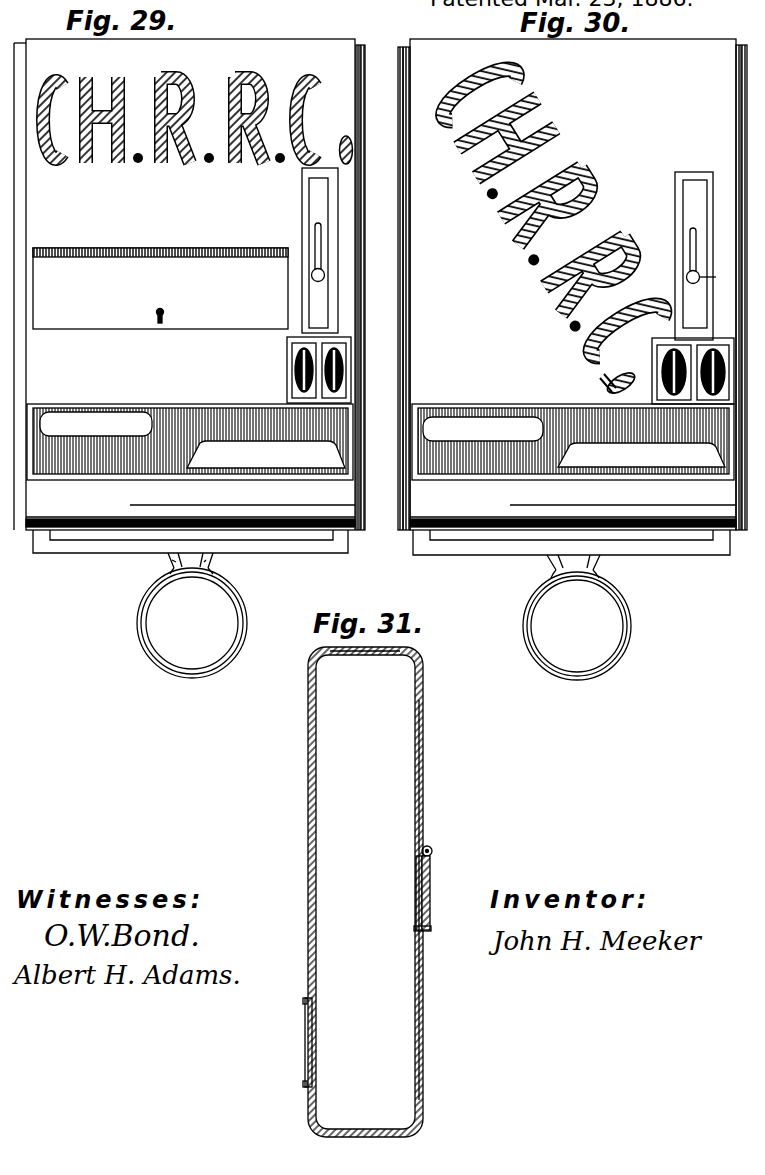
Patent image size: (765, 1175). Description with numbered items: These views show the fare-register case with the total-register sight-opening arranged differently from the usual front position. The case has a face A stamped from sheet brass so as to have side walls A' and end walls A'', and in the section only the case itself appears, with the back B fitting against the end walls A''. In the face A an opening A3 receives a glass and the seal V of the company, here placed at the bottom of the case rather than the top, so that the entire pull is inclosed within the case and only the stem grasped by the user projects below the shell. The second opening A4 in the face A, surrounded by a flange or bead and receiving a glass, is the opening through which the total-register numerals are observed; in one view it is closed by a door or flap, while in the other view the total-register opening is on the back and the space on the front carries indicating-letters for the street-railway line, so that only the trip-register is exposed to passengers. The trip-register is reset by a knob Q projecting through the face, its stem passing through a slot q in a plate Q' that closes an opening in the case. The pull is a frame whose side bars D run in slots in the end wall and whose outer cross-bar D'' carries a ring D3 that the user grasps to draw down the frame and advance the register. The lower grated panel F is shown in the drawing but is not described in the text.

In FIG. 29, the face of shell or case A is at (189, 284).
In FIG. 30, the face of shell or case A is at (572, 284).
In FIG. 31, the face of shell or case A is at (365, 892).
In FIG. 31, the side walls A' is at (390, 900).
In FIG. 31, the end walls A'' is at (365, 890).
In FIG. 29, the opening A3 is at (270, 370).
In FIG. 30, the opening A3 is at (639, 371).
In FIG. 31, the opening A3 is at (326, 1042).
In FIG. 29, the second opening A4 is at (160, 300).
In FIG. 31, the second opening A4 is at (411, 893).
In FIG. 29, the seal V is at (307, 250).
In FIG. 30, the seal V is at (676, 210).
In FIG. 29, the slot q is at (322, 231).
In FIG. 30, the slot q is at (683, 245).
In FIG. 29, the knob Q is at (333, 283).
In FIG. 30, the knob Q is at (714, 278).
In FIG. 30, the plate Q' is at (676, 286).
In FIG. 29, the grated lower panel F is at (206, 428).
In FIG. 30, the grated lower panel F is at (584, 428).
In FIG. 29, the side bars D is at (200, 556).
In FIG. 30, the side bars D is at (574, 555).
In FIG. 29, the cross-bar D'' is at (235, 568).
In FIG. 30, the cross-bar D'' is at (615, 569).
In FIG. 29, the ring D3 is at (192, 623).
In FIG. 30, the ring D3 is at (577, 625).
In FIG. 31, the back B is at (420, 830).